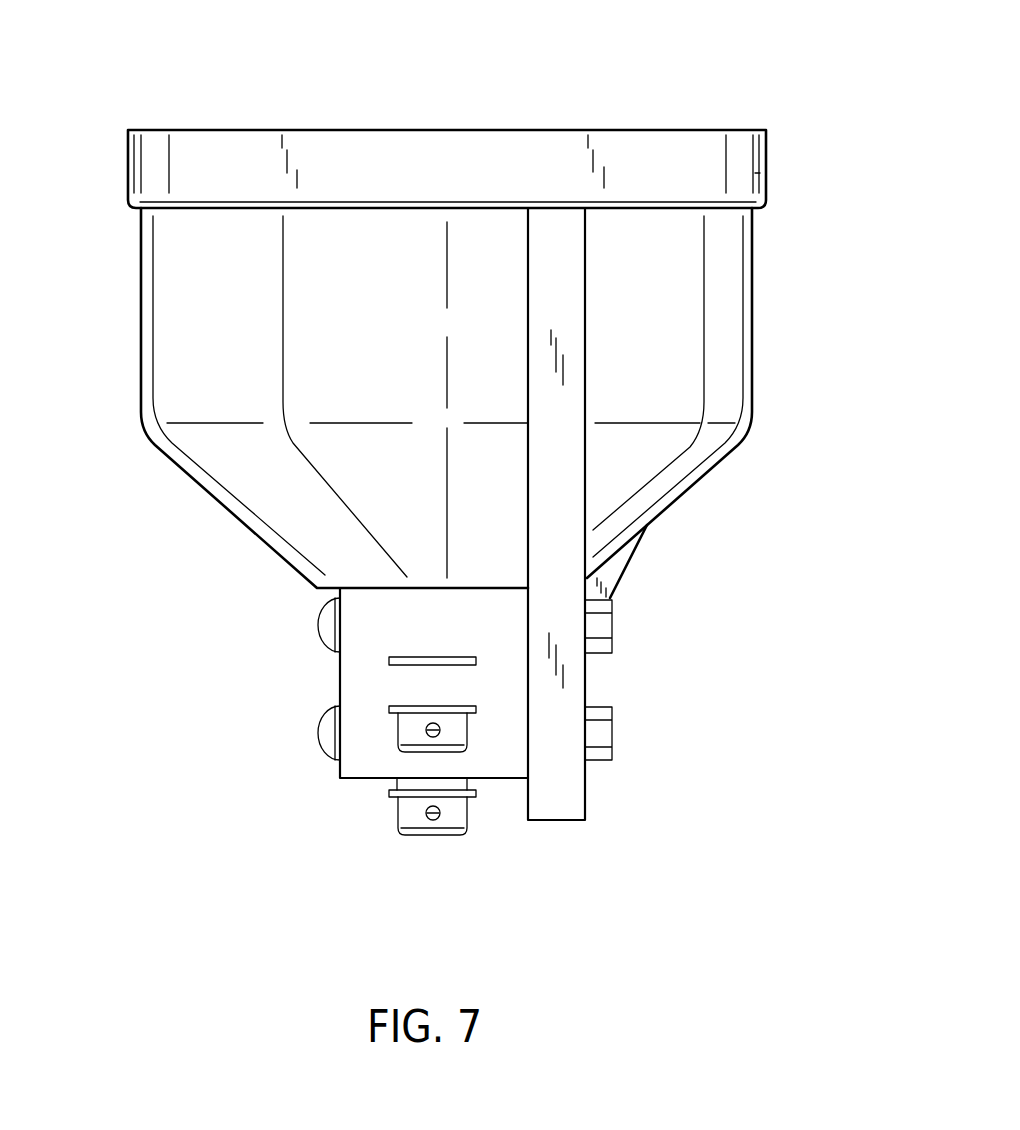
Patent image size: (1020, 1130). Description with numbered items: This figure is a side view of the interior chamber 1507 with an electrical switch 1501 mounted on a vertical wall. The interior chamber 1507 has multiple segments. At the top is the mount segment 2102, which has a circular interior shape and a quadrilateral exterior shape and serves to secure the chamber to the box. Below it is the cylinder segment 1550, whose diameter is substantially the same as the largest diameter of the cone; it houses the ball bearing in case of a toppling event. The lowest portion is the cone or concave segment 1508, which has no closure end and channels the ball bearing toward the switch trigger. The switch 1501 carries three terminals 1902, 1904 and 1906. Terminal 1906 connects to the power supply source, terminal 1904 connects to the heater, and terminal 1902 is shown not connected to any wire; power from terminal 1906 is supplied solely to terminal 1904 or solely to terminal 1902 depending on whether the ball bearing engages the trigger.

The interior chamber 1507 is at (717, 130).
The mount segment 2102 is at (760, 173).
The cylinder segment 1550 is at (688, 332).
The cone or concave segment 1508 is at (657, 485).
The switch 1501 is at (497, 682).
The terminal 1906 is at (410, 658).
The terminal 1904 is at (412, 727).
The terminal 1902 is at (412, 810).